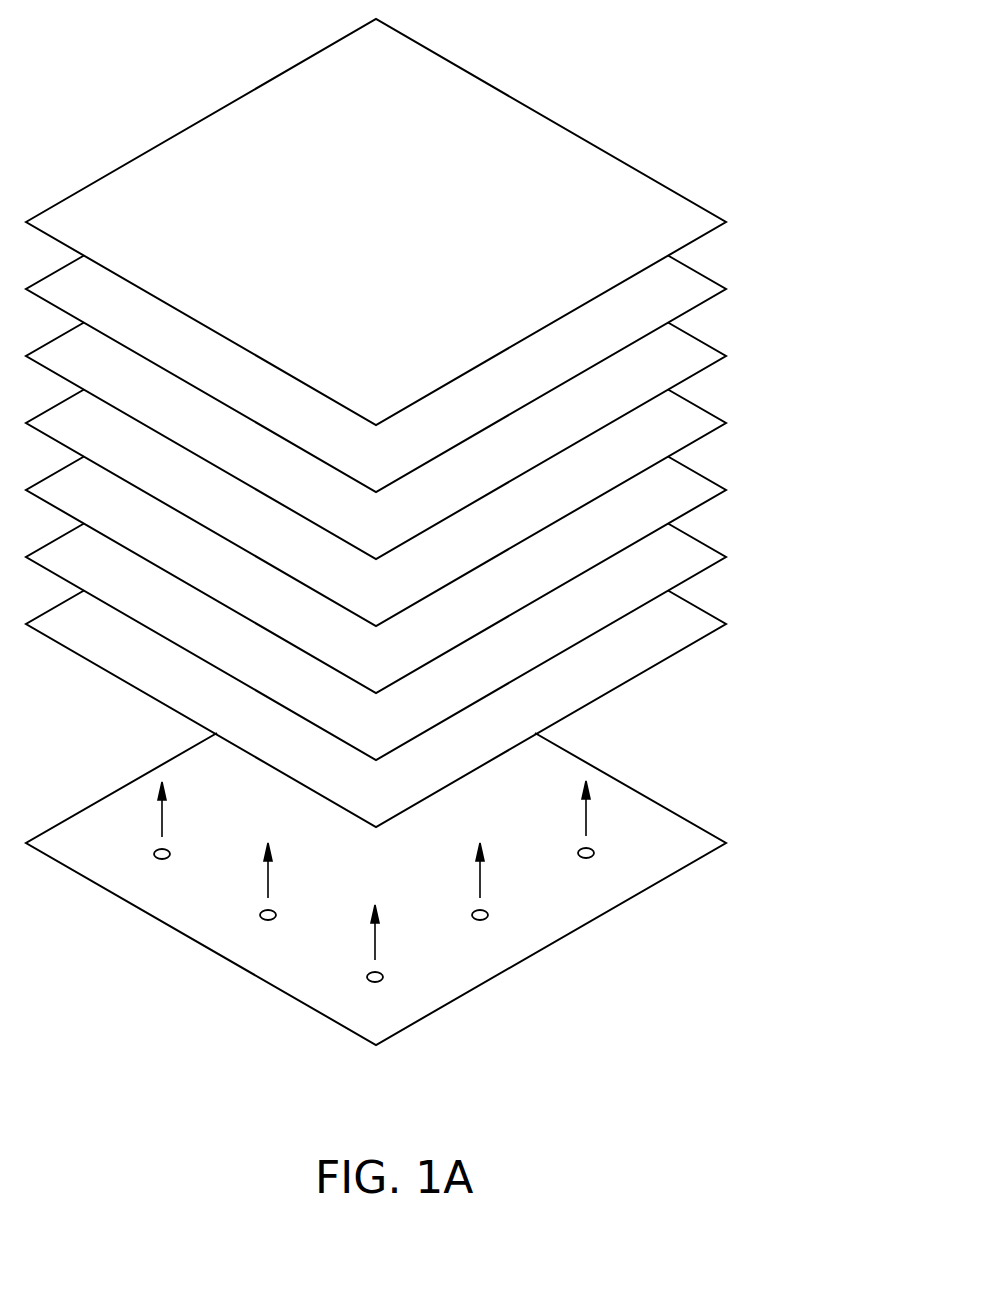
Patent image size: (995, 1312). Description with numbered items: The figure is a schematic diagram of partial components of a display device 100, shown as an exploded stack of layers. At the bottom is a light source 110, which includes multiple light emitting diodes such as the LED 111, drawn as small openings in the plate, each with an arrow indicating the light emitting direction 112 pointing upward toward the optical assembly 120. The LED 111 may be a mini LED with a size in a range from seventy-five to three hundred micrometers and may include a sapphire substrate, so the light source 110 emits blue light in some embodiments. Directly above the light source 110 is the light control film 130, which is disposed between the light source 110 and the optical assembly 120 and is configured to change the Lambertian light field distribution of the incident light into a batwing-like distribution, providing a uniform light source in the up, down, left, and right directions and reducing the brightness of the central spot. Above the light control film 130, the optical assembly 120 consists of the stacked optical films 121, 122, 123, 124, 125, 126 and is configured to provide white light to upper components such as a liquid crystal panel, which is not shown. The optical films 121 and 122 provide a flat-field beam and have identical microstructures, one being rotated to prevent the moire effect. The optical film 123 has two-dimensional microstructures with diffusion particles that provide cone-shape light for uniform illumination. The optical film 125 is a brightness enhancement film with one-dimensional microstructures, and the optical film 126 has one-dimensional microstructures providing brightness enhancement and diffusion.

The display device 100 is at (80, 19).
The light source 110 is at (583, 923).
The LED 111 is at (375, 983).
The light emitting direction 112 is at (374, 941).
The optical assembly 120 is at (823, 177).
The optical film 121 is at (704, 544).
The optical film 122 is at (704, 477).
The optical film 123 is at (704, 410).
The optical film 124 is at (704, 343).
The optical film 125 is at (704, 276).
The optical film 126 is at (704, 209).
The light control film 130 is at (704, 611).